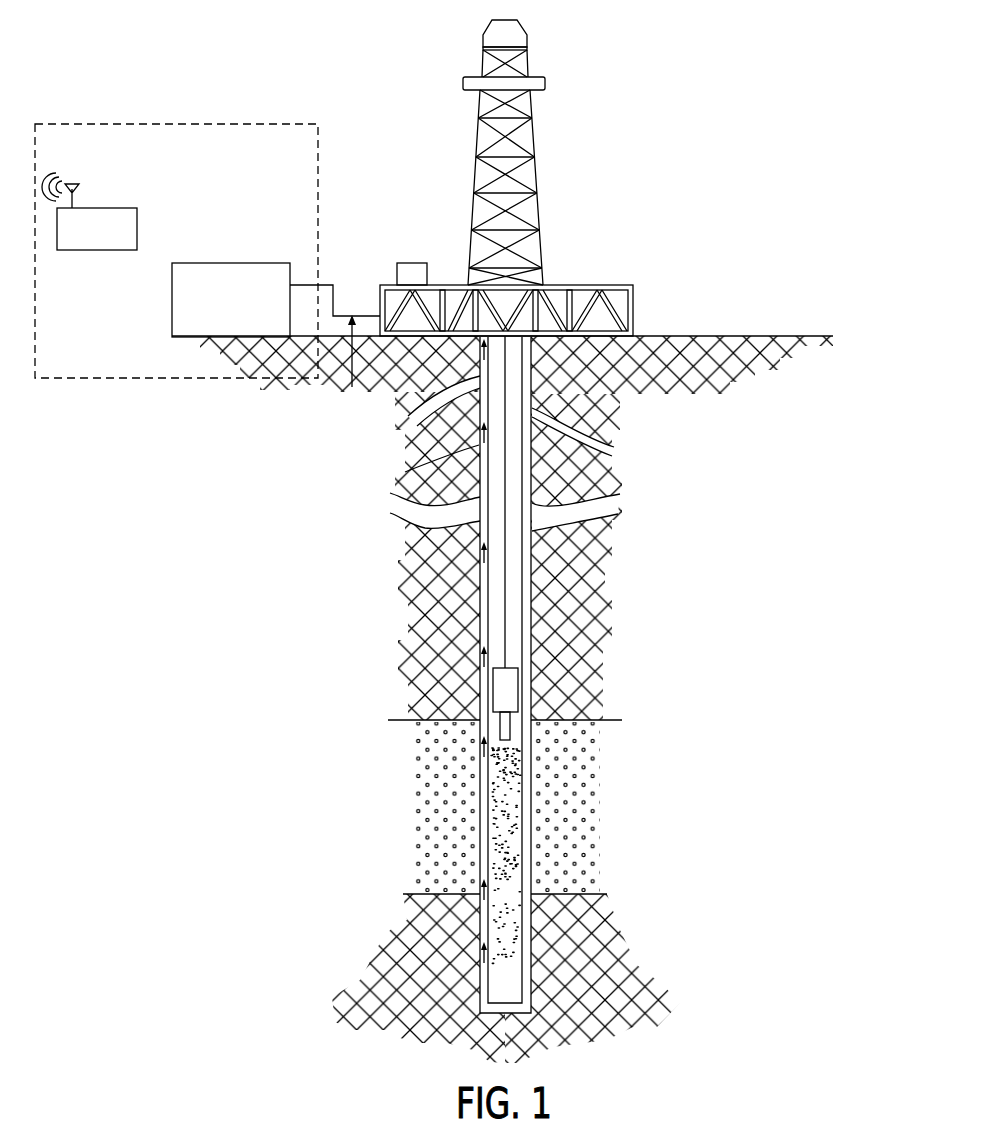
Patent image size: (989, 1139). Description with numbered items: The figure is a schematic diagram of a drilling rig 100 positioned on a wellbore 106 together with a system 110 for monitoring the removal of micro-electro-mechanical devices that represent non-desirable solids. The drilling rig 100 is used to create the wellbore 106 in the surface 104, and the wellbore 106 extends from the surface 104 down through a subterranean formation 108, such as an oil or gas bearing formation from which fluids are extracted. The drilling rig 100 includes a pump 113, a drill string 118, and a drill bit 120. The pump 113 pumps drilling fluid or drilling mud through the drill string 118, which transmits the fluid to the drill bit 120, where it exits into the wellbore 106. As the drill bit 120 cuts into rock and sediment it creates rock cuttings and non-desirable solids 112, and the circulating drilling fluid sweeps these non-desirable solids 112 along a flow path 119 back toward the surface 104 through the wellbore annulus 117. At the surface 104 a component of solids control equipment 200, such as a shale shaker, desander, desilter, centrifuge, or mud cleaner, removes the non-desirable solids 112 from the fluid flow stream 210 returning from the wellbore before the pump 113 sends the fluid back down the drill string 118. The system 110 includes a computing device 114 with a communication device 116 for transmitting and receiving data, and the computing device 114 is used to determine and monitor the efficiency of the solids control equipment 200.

The drilling rig 100 is at (634, 131).
The surface 104 is at (733, 335).
The wellbore 106 is at (538, 412).
The subterranean formation 108 is at (592, 803).
The system 110 is at (174, 122).
The non-desirable solids 112 is at (492, 820).
The pump 113 is at (417, 262).
The computing device 114 is at (138, 228).
The communication device 116 is at (78, 187).
The wellbore annulus 117 is at (531, 570).
The drill string 118 is at (488, 702).
The flow path 119 is at (457, 535).
The drill bit 120 is at (498, 727).
The solids control equipment 200 is at (172, 300).
The fluid flow stream 210 is at (366, 314).